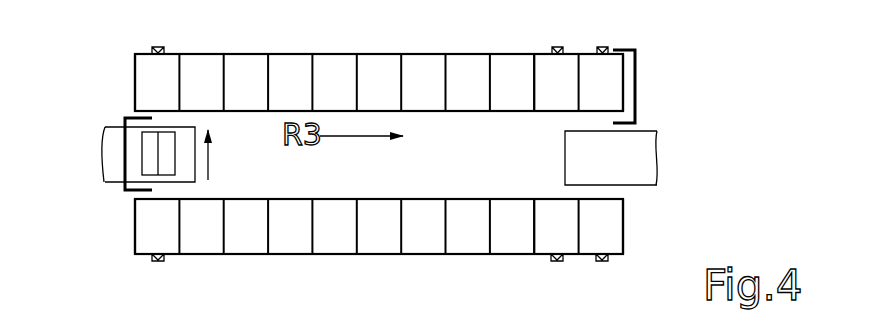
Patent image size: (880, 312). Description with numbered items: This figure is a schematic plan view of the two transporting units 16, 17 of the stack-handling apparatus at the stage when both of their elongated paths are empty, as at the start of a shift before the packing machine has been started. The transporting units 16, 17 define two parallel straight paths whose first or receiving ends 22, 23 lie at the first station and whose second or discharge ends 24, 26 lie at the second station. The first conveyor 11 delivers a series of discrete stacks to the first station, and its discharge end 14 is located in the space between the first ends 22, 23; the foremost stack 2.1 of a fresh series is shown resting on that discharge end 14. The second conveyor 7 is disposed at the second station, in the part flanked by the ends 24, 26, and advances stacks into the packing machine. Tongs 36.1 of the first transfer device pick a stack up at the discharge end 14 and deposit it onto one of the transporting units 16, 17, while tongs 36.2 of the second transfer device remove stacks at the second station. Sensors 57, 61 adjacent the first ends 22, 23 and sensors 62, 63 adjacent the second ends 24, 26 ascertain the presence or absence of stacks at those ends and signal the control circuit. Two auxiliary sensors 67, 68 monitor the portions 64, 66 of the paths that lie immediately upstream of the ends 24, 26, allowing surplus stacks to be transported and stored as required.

The foremost stack 2.1 is at (167, 160).
The second conveyor 7 is at (658, 153).
The first conveyor 11 is at (113, 133).
The discharge end 14 is at (150, 152).
The transporting unit 16 is at (296, 54).
The transporting unit 17 is at (417, 255).
The first end 22 is at (173, 70).
The first end 23 is at (143, 221).
The second end 24 is at (615, 74).
The second end 26 is at (615, 228).
The tongs 36.1 is at (120, 190).
The tongs 36.2 is at (637, 90).
The sensor 57 is at (152, 49).
The sensor 61 is at (165, 258).
The sensor 62 is at (608, 44).
The sensor 63 is at (609, 262).
The path portion 64 is at (545, 78).
The path portion 66 is at (550, 212).
The auxiliary sensor 67 is at (555, 48).
The auxiliary sensor 68 is at (549, 262).